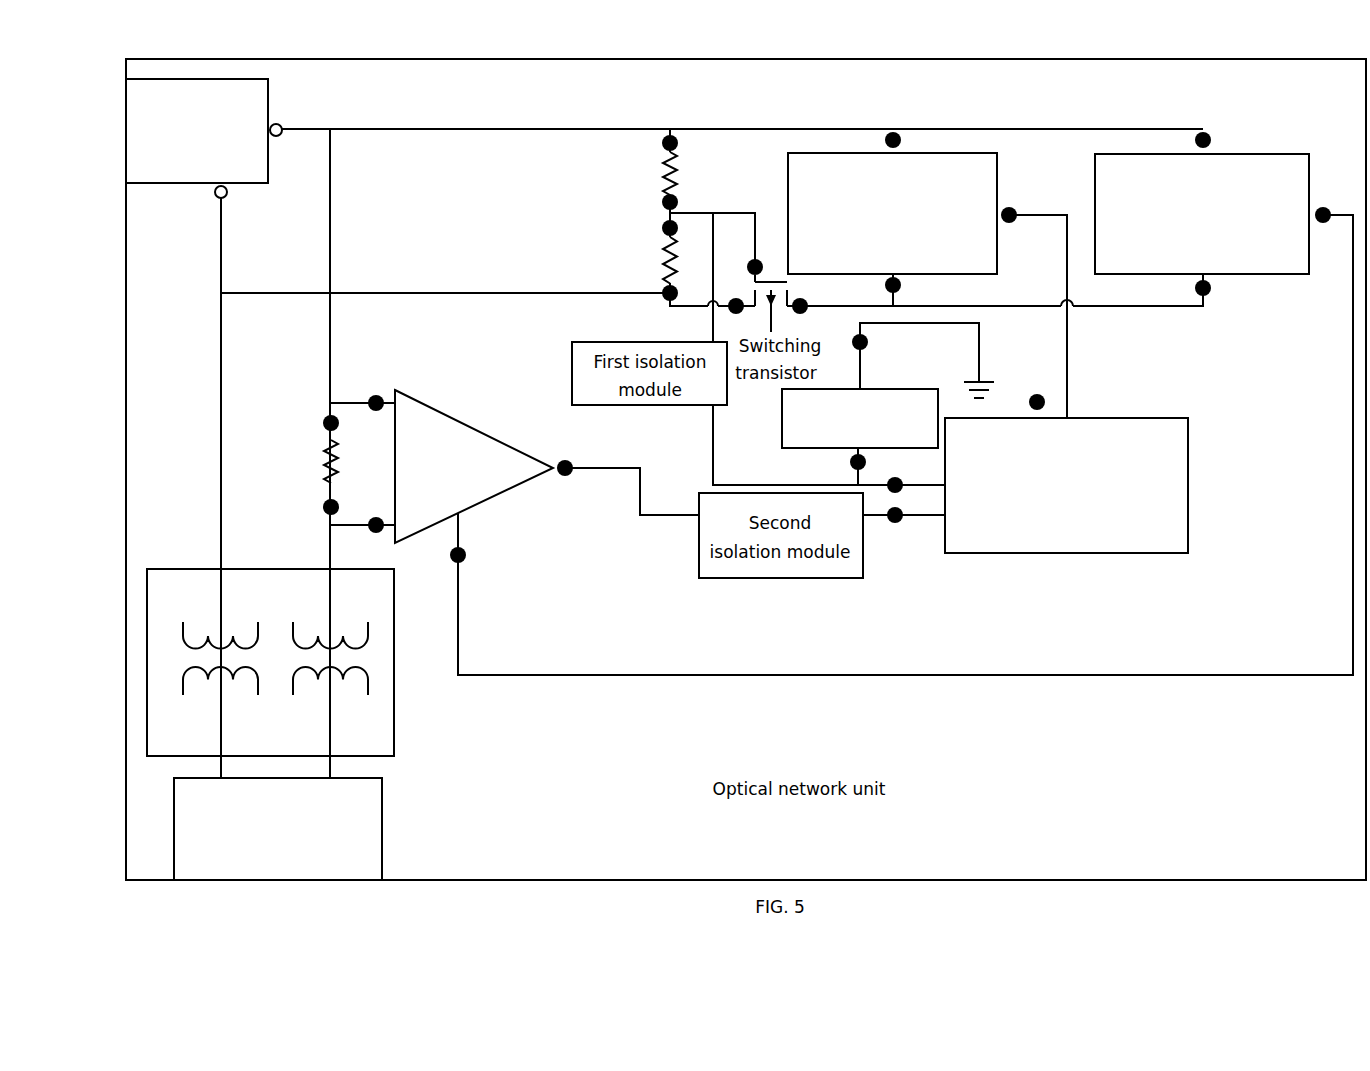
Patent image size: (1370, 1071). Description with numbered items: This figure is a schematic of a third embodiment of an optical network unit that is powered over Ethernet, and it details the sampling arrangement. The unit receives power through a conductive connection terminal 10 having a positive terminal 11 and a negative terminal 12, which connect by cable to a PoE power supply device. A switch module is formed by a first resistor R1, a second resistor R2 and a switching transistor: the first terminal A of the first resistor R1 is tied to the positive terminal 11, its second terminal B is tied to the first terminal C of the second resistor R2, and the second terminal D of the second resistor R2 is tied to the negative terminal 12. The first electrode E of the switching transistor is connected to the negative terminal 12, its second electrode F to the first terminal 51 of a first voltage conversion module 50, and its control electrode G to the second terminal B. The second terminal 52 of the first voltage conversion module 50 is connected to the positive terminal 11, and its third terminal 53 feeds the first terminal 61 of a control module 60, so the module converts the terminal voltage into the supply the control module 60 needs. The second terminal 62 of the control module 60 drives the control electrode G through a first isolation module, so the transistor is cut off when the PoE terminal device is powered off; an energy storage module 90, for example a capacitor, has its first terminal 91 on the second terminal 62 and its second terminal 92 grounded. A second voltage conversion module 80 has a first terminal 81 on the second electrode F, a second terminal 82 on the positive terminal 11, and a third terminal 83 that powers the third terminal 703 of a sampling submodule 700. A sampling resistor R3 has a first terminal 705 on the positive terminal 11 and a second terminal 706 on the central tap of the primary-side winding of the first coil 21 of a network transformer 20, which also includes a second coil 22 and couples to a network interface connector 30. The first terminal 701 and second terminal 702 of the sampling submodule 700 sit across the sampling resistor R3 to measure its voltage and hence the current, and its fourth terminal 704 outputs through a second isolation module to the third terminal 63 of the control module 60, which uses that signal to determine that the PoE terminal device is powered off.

The conductive connection terminal 10 is at (197, 131).
The positive terminal 11 is at (288, 115).
The negative terminal 12 is at (203, 202).
The network transformer 20 is at (396, 663).
The first coil 21 is at (305, 660).
The second coil 22 is at (202, 657).
The network interface connector 30 is at (278, 829).
The first voltage conversion module 50 is at (892, 213).
The first terminal of the first voltage conversion module 51 is at (913, 292).
The second terminal of the first voltage conversion module 52 is at (893, 120).
The third terminal of the first voltage conversion module 53 is at (1016, 203).
The control module 60 is at (1066, 485).
The first terminal of the control module 61 is at (1062, 400).
The second terminal of the control module 62 is at (903, 473).
The third terminal of the control module 63 is at (895, 535).
The second voltage conversion module 80 is at (1202, 214).
The first terminal of the second voltage conversion module 81 is at (1219, 306).
The second terminal of the second voltage conversion module 82 is at (1203, 120).
The third terminal of the second voltage conversion module 83 is at (1331, 197).
The energy storage module 90 is at (860, 418).
The first terminal of the energy storage module 91 is at (840, 469).
The second terminal of the energy storage module 92 is at (880, 344).
The sampling submodule 700 is at (483, 503).
The first terminal of the sampling submodule 701 is at (376, 385).
The second terminal of the sampling submodule 702 is at (365, 540).
The third terminal of the sampling submodule 703 is at (437, 573).
The fourth terminal of the sampling submodule 704 is at (582, 460).
The first terminal of the sampling resistor 705 is at (305, 424).
The second terminal of the sampling resistor 706 is at (305, 513).
The first resistor R1 is at (649, 173).
The second resistor R2 is at (649, 260).
The sampling resistor R3 is at (309, 461).
The first terminal of the first resistor A is at (680, 151).
The second terminal of the first resistor B is at (680, 196).
The first terminal of the second resistor C is at (680, 234).
The second terminal of the second resistor D is at (681, 293).
The first electrode of the switching transistor E is at (736, 295).
The second electrode of the switching transistor F is at (809, 300).
The control electrode of the switching transistor G is at (762, 256).